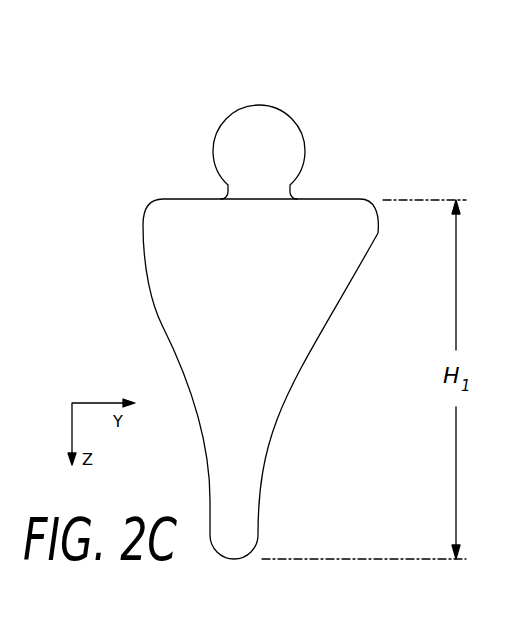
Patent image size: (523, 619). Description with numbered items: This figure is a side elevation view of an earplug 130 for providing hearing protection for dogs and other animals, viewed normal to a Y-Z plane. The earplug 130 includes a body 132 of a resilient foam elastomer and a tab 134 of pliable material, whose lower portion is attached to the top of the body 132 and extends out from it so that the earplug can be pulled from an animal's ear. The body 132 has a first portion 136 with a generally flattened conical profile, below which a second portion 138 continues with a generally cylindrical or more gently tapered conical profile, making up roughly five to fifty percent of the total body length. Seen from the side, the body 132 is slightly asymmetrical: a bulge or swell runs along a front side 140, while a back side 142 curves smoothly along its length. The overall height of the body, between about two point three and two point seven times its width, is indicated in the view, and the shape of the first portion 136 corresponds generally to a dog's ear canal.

The earplug 130 is at (254, 295).
The body 132 is at (360, 180).
The tab 134 is at (214, 140).
The first portion 136 is at (365, 257).
The second portion 138 is at (258, 521).
The front side 140 is at (150, 288).
The back side 142 is at (293, 385).